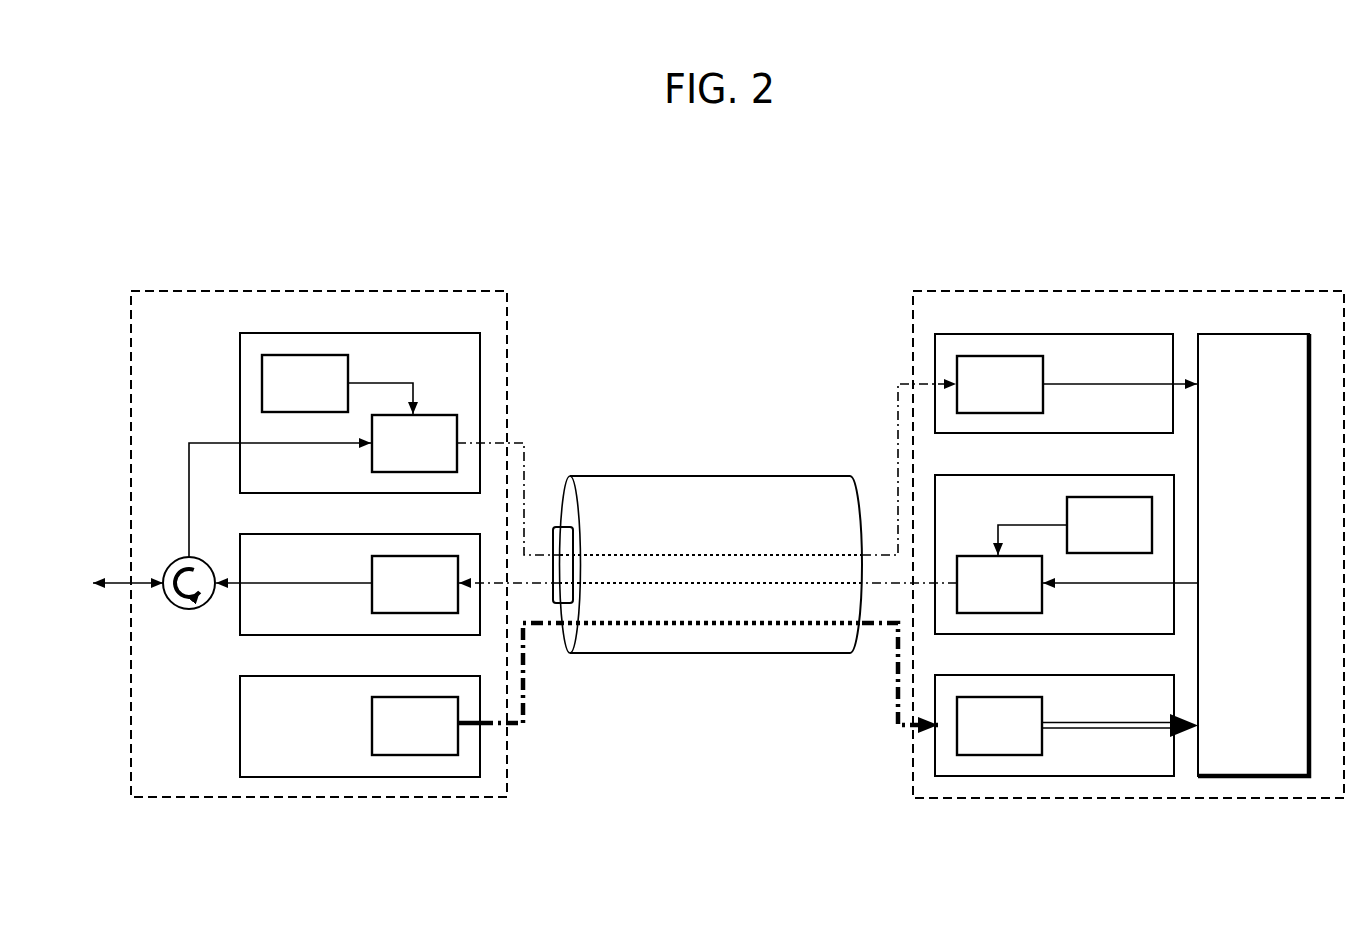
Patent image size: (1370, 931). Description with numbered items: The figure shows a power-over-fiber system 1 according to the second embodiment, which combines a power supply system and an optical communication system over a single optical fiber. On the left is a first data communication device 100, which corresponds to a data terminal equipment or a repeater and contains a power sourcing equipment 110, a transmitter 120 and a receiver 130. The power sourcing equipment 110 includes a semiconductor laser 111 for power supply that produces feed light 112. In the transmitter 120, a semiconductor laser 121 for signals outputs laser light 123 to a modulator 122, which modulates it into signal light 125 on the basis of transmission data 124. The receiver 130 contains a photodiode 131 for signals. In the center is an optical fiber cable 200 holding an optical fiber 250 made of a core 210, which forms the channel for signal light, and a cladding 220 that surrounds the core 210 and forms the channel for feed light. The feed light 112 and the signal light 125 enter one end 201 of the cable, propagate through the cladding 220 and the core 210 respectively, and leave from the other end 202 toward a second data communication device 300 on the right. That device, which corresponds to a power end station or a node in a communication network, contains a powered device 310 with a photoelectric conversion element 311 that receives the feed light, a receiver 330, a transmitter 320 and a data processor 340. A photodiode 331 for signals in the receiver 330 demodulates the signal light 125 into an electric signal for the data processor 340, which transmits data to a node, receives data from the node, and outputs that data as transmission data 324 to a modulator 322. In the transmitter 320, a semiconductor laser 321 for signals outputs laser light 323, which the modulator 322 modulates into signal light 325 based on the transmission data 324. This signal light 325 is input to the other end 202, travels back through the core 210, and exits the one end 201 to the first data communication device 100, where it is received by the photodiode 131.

The power-over-fiber system 1 is at (870, 205).
The first data communication device 100 is at (352, 292).
The power sourcing equipment 110 is at (308, 676).
The semiconductor laser for power supply 111 is at (372, 715).
The feed light 112 is at (518, 723).
The transmitter 120 is at (308, 333).
The semiconductor laser for signals 121 is at (348, 366).
The modulator 122 is at (372, 460).
The laser light 123 is at (412, 382).
The transmission data 124 is at (280, 444).
The signal light 125 is at (515, 443).
The receiver 130 is at (308, 534).
The photodiode for signals 131 is at (372, 565).
The optical fiber cable 200 is at (710, 542).
The one end 201 is at (562, 652).
The other end 202 is at (858, 650).
The core 210 is at (555, 535).
The cladding 220 is at (571, 510).
The optical fiber 250 is at (769, 476).
The second data communication device 300 is at (1040, 292).
The powered device 310 is at (1112, 675).
The photoelectric conversion element 311 is at (1043, 712).
The transmitter 320 is at (1112, 475).
The semiconductor laser for signals 321 is at (1102, 550).
The modulator 322 is at (1042, 597).
The laser light 323 is at (1028, 525).
The transmission data 324 is at (1102, 585).
The signal light 325 is at (900, 582).
The receiver 330 is at (1112, 334).
The photodiode for signals 331 is at (1043, 372).
The data processor 340 is at (1262, 334).